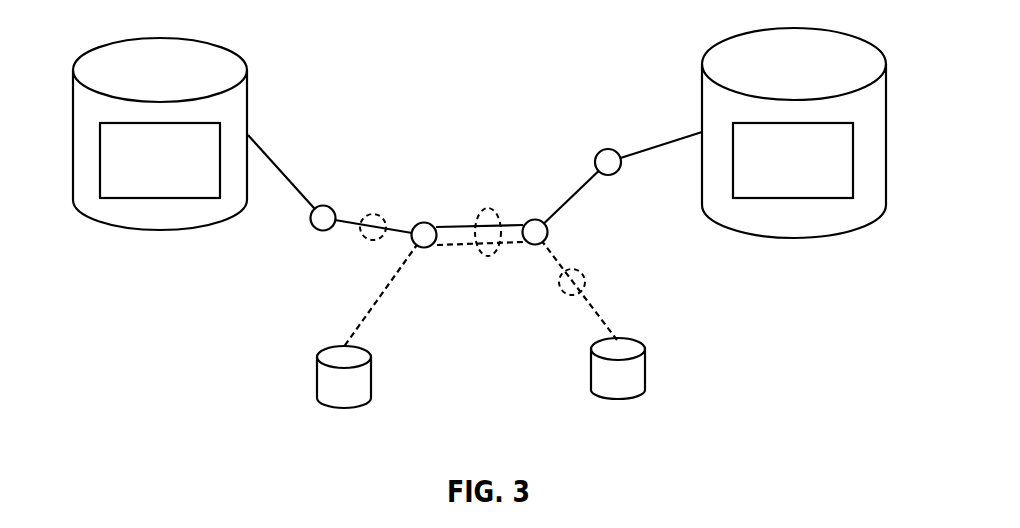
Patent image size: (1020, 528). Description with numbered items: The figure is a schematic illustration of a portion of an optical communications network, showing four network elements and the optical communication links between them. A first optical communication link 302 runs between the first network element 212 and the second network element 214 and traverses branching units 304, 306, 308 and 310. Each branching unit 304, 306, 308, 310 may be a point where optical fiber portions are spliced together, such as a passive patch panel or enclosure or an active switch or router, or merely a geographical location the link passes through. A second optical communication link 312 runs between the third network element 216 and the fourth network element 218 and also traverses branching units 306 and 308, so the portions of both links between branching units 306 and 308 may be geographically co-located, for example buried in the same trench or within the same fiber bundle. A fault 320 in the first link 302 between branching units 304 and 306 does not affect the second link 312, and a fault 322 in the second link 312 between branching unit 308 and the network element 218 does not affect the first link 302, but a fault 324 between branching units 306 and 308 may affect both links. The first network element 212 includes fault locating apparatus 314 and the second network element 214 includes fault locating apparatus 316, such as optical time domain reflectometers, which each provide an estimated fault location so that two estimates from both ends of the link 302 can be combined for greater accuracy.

The first network element 212 is at (198, 168).
The second network element 214 is at (752, 163).
The third network element 216 is at (372, 375).
The fourth network element 218 is at (647, 362).
The first optical communication link 302 is at (307, 203).
The branching unit 304 is at (330, 208).
The branching unit 306 is at (430, 248).
The branching unit 308 is at (548, 233).
The branching unit 310 is at (595, 158).
The second optical communication link 312 is at (605, 303).
The fault locating apparatus 314 is at (127, 198).
The fault locating apparatus 316 is at (802, 198).
The fault 320 is at (380, 213).
The fault 322 is at (565, 292).
The fault 324 is at (485, 208).